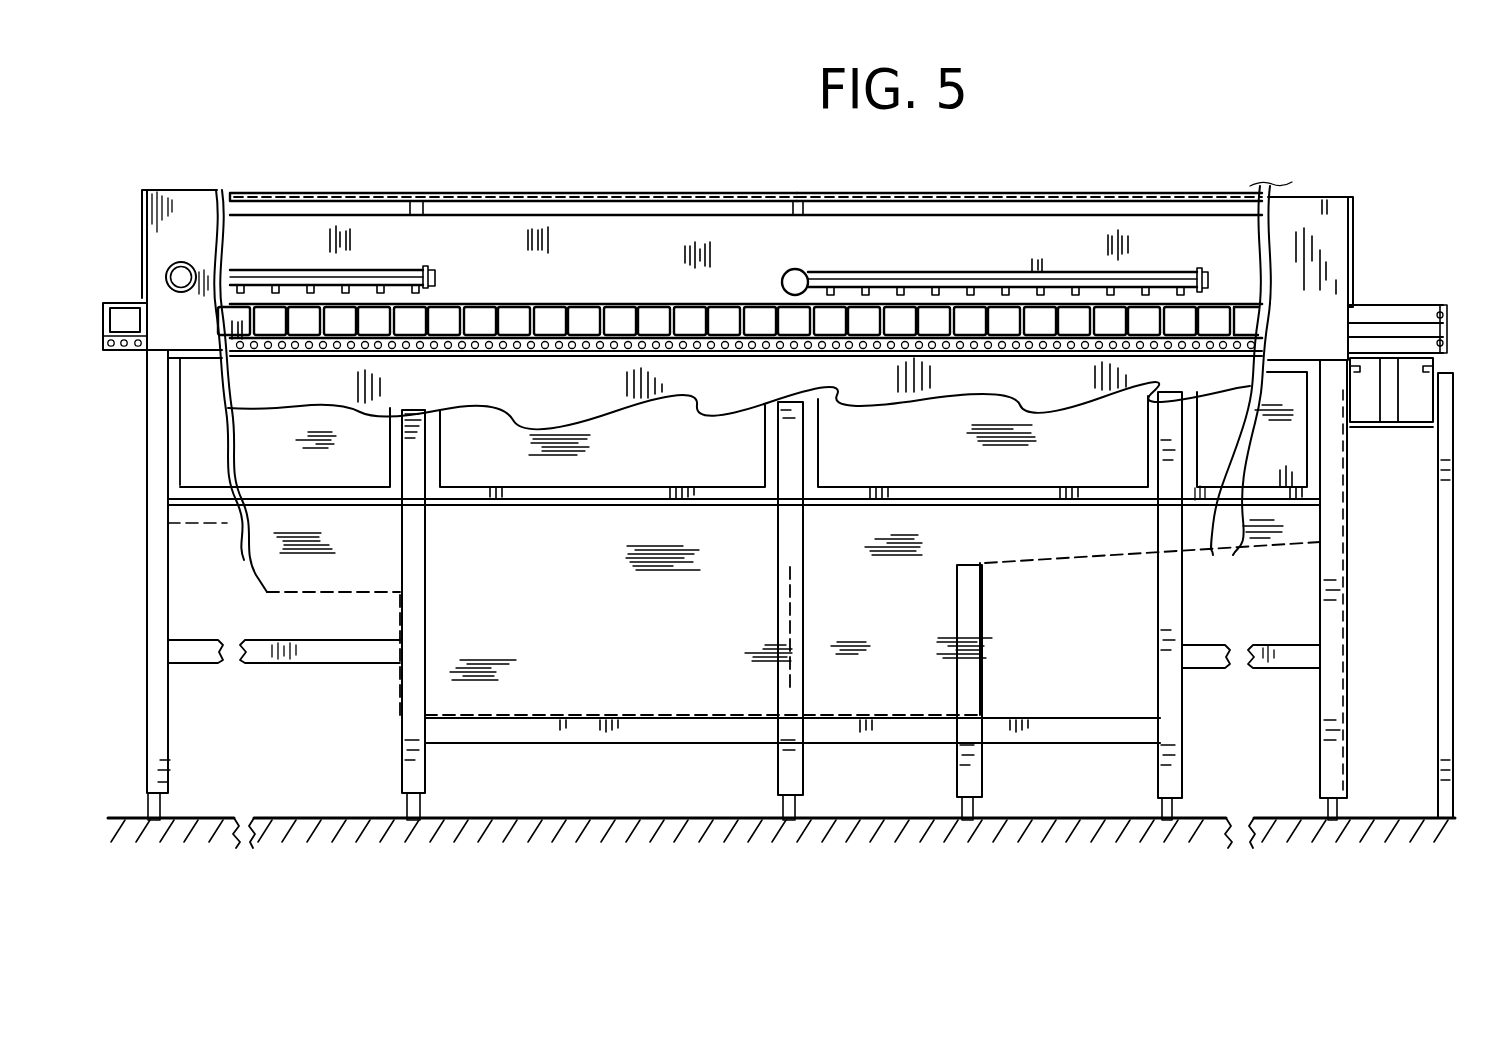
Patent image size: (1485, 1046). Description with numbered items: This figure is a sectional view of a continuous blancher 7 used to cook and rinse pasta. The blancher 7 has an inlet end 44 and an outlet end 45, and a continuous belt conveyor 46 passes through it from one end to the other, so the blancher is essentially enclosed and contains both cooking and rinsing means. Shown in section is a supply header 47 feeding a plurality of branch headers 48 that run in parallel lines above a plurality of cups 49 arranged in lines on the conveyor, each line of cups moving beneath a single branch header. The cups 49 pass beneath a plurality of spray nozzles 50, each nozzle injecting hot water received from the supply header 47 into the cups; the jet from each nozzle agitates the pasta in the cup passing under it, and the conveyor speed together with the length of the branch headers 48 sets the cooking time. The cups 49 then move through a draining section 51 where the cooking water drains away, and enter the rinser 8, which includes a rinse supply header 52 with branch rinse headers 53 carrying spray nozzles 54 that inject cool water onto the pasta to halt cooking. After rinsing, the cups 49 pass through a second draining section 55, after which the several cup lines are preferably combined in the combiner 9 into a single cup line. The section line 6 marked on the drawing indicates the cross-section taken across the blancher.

The section line 6- 6 is at (162, 135).
The blancher 7 is at (296, 177).
The rinser 8 is at (966, 181).
The combiner 9 is at (1431, 297).
The inlet end 44 is at (140, 256).
The outlet end 45 is at (1372, 245).
The continuous belt conveyor 46 is at (711, 358).
The supply header 47 is at (181, 261).
The branch headers 48 is at (282, 272).
The cups 49 is at (479, 299).
The spray nozzles 50 is at (396, 290).
The draining section 51 is at (618, 243).
The rinse supply header 52 is at (781, 271).
The branch rinse headers 53 is at (840, 280).
The spray nozzles 54 is at (935, 296).
The draining section 55 is at (1228, 290).